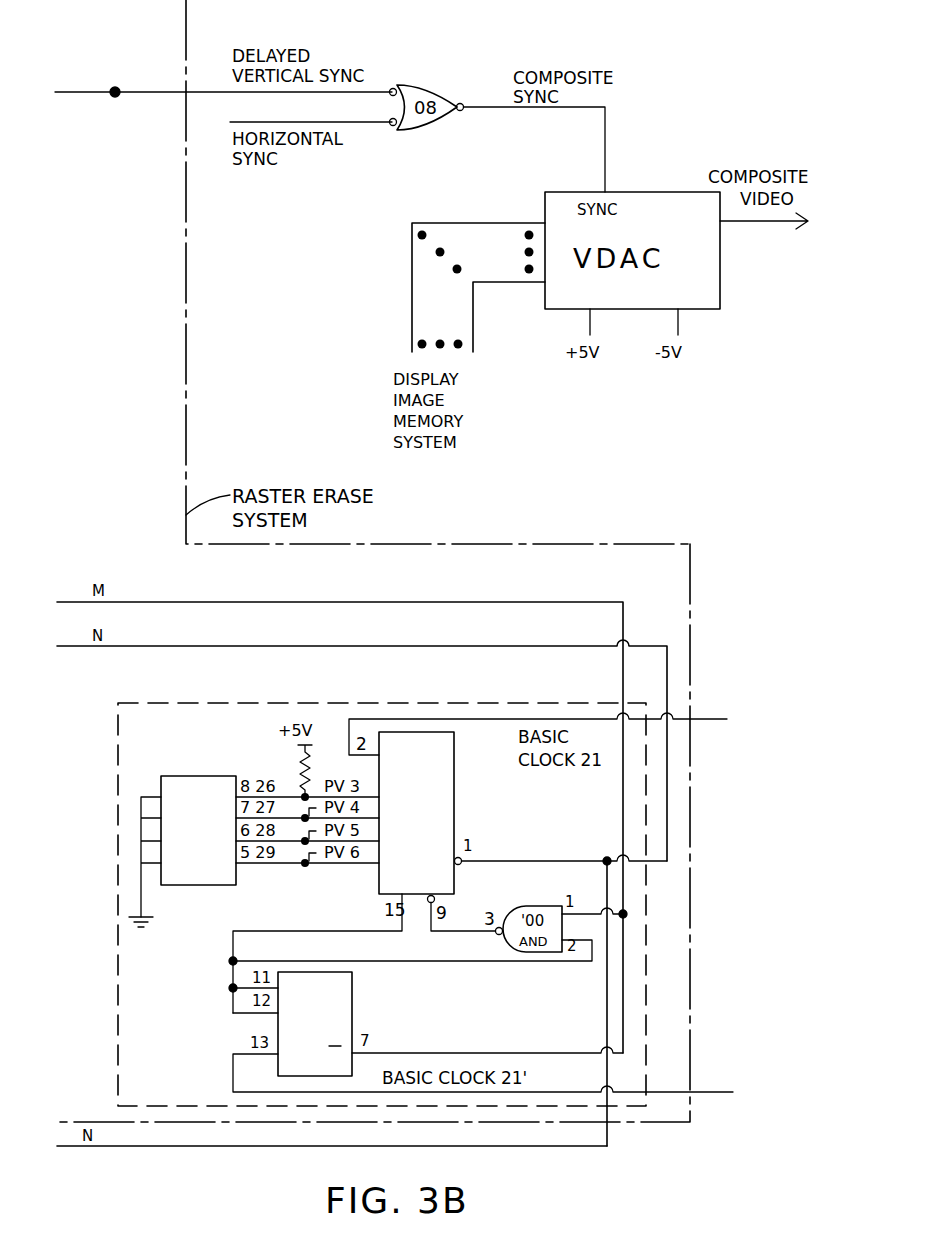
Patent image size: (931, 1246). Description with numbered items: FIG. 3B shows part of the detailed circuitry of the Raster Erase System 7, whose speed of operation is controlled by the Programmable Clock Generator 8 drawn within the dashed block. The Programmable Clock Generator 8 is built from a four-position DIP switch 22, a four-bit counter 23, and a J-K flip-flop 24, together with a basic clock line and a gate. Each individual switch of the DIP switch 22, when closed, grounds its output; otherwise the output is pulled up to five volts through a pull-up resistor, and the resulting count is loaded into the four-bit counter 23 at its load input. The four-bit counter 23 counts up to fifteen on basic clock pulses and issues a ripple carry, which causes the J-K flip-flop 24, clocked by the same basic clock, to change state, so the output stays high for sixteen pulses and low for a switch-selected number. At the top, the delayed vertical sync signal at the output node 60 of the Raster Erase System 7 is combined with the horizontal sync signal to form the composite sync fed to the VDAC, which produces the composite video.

The output node 60 is at (223, 82).
The Raster Erase System 7 is at (186, 410).
The Programmable Clock Generator 8 is at (350, 703).
The DIP switch 22 is at (181, 776).
The four-bit counter 23 is at (454, 781).
The J-K flip-flop 24 is at (352, 994).